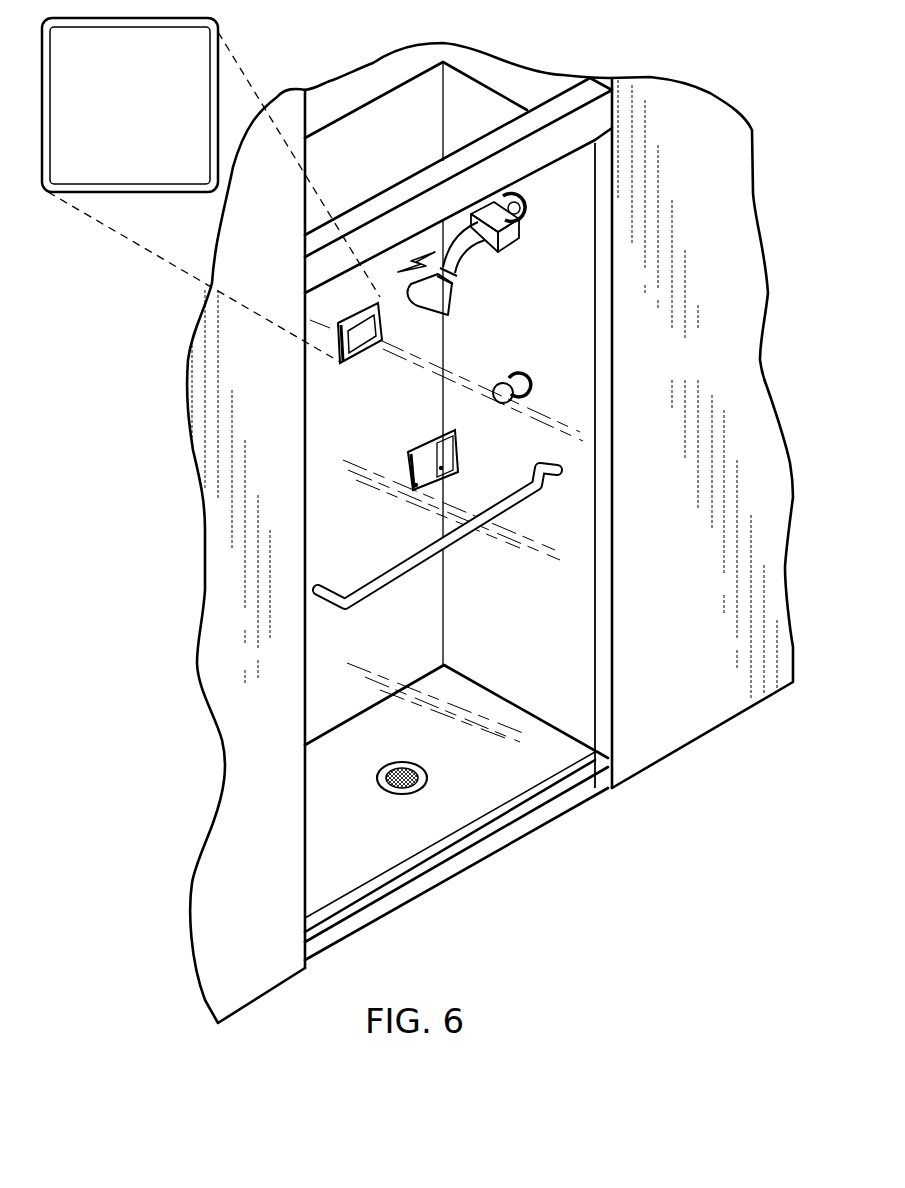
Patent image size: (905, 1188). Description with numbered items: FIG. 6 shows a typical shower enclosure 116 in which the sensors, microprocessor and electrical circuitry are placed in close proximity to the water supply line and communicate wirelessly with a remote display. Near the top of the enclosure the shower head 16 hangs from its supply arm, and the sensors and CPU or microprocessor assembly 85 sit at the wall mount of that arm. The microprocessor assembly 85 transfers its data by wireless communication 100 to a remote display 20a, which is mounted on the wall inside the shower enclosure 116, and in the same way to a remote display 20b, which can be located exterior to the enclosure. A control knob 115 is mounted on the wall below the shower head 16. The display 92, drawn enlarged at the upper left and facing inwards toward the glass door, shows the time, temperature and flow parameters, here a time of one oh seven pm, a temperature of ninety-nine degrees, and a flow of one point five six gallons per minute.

The shower head 16 is at (440, 297).
The remote display 20a is at (360, 365).
The remote display 20b is at (427, 459).
The microprocessor assembly 85 is at (475, 200).
The display 92 is at (100, 193).
The wireless communication 100 is at (413, 257).
The valve handle 115 is at (532, 388).
The shower enclosure 116 is at (343, 496).